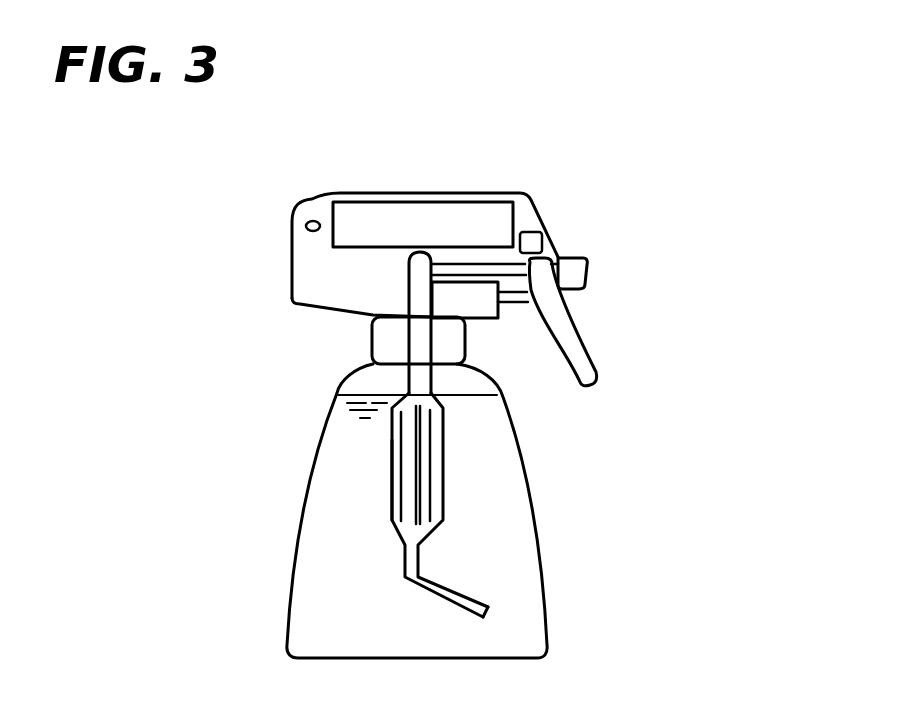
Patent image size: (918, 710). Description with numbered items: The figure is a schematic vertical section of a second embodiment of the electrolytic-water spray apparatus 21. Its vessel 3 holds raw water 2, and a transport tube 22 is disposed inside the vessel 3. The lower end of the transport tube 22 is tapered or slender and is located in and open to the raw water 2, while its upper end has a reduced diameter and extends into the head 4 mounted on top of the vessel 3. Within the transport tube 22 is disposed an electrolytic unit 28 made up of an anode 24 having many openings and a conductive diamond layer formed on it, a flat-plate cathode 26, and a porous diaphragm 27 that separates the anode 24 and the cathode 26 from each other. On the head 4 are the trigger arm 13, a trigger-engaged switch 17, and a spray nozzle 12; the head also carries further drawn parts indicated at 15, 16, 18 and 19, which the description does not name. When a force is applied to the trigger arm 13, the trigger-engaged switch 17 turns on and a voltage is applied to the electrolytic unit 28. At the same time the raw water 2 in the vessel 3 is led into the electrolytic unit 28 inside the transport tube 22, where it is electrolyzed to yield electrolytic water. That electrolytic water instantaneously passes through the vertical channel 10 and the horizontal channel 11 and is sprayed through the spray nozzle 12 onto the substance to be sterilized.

The raw water 2 is at (520, 612).
The vessel 3 is at (533, 517).
The head 4 is at (390, 188).
The vertical channel 10 is at (390, 343).
The horizontal channel 11 is at (480, 270).
The spray nozzle 12 is at (577, 273).
The trigger arm 13 is at (592, 382).
The link 15 is at (507, 307).
The pump housing 16 is at (455, 297).
The trigger-engaged switch 17 is at (527, 245).
The display 18 is at (427, 220).
The hook hole 19 is at (306, 226).
The electrolytic-water spray apparatus 21 is at (690, 380).
The transport tube 22 is at (443, 508).
The anode 24 is at (402, 445).
The cathode 26 is at (430, 468).
The diaphragm 27 is at (417, 492).
The electrolytic unit 28 is at (391, 508).